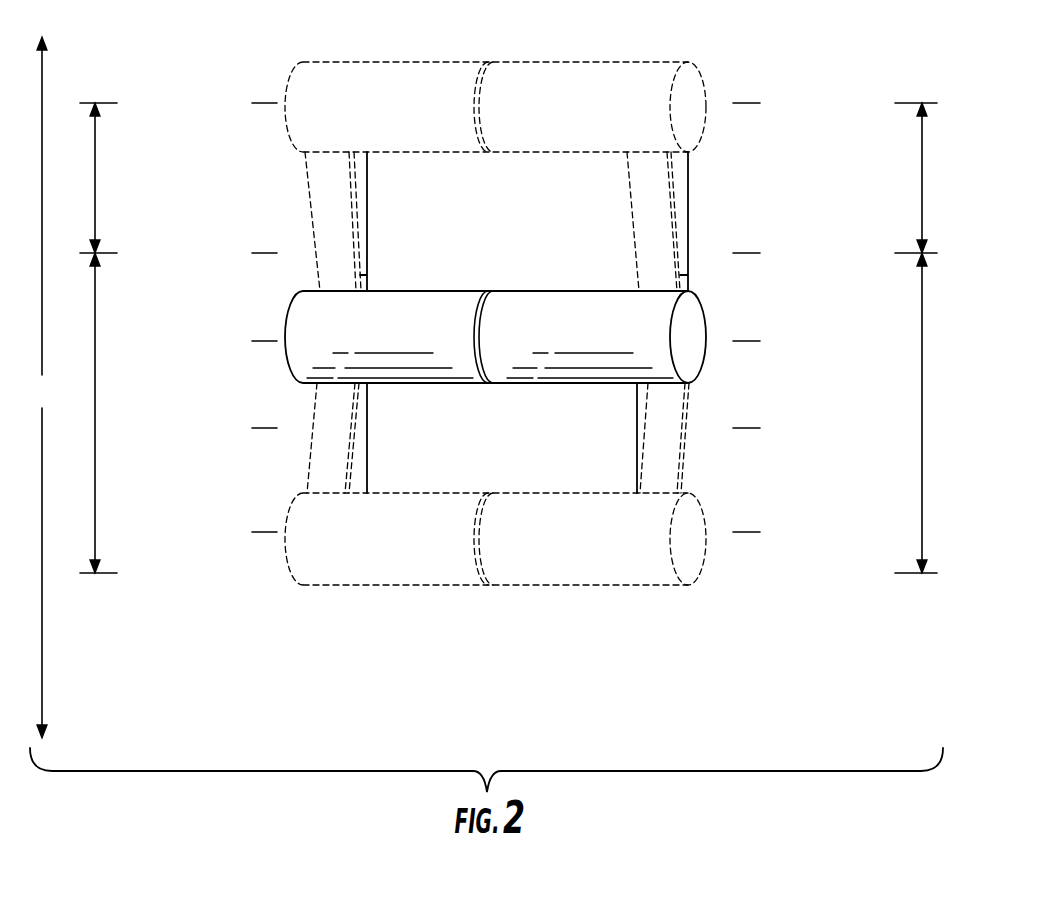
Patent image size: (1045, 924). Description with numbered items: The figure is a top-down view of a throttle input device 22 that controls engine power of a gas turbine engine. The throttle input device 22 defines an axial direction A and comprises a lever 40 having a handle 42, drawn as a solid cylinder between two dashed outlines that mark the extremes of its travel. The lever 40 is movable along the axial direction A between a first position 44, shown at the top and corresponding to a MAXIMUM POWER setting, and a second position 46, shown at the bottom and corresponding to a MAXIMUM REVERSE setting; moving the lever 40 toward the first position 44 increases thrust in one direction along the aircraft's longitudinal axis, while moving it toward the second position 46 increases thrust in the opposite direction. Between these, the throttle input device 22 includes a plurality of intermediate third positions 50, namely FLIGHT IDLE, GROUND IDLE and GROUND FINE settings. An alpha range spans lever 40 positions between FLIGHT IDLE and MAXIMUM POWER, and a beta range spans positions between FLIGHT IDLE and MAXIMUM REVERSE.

The throttle input device 22 is at (155, 644).
The lever 40 is at (652, 206).
The handle 42 is at (555, 306).
The first position 44 is at (265, 103).
The second position 46 is at (262, 534).
The intermediate third positions 50 is at (262, 255).